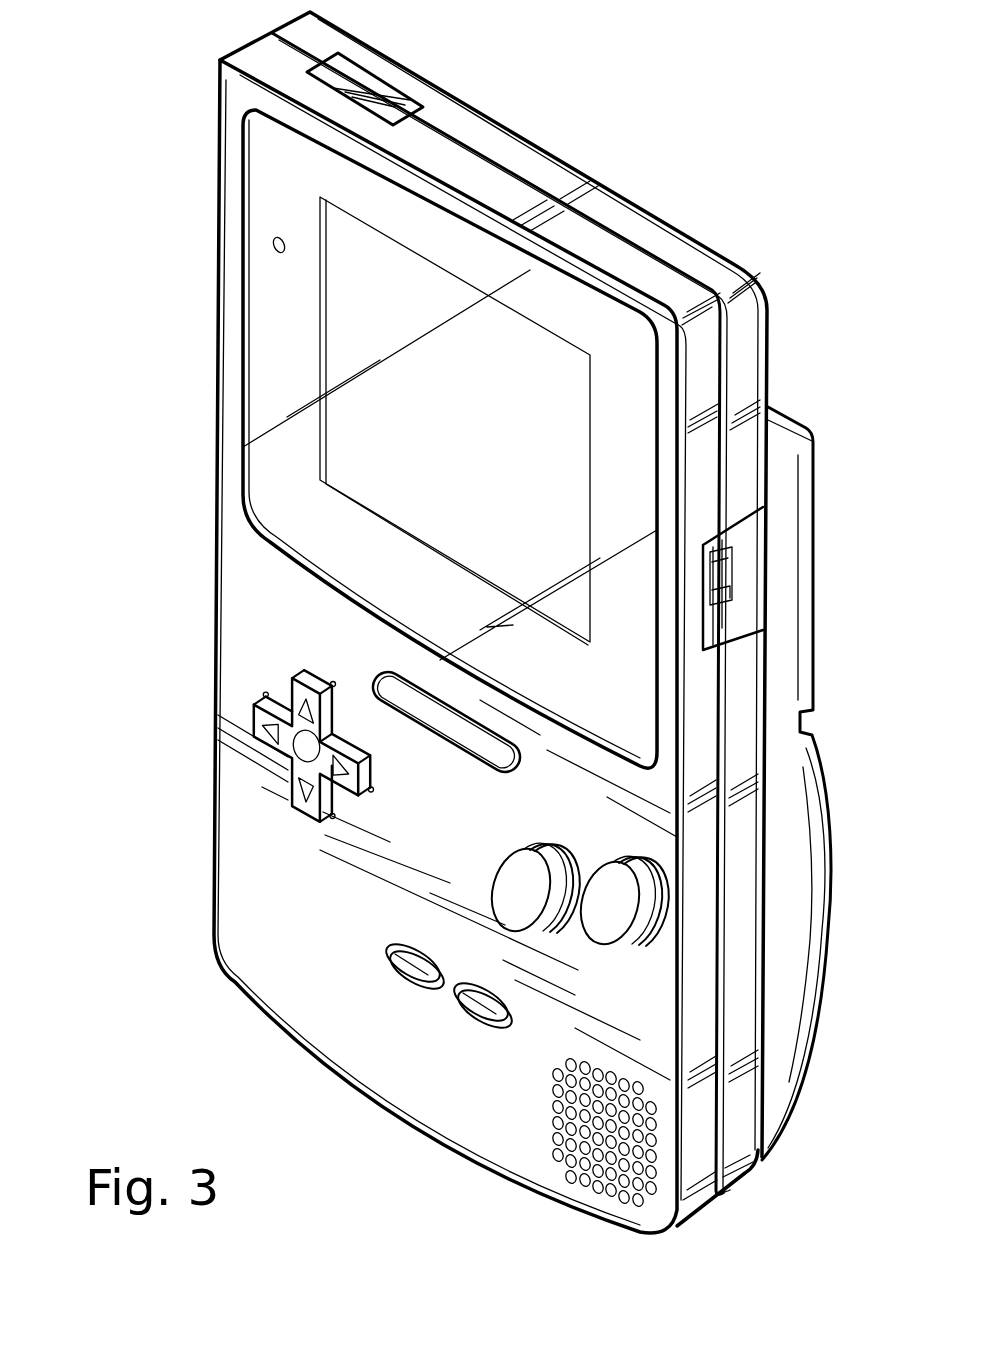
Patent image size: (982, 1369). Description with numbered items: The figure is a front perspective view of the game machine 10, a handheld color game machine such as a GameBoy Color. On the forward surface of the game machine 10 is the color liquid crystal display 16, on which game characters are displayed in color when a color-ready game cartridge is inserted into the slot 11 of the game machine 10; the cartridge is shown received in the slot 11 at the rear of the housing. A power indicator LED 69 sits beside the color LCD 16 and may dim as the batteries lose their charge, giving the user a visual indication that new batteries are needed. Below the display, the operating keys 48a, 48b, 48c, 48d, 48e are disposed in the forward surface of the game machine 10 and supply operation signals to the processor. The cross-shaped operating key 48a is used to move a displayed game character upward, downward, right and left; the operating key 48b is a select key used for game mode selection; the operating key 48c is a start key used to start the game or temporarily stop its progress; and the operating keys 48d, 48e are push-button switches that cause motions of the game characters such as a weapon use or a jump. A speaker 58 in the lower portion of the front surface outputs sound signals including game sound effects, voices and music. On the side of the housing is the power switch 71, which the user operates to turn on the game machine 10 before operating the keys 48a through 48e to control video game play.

The game machine 10 is at (195, 642).
The slot 11 is at (782, 413).
The color liquid crystal display 16 is at (345, 352).
The power indicator LED 69 is at (275, 238).
The power switch 71 is at (745, 593).
The operating key 48a is at (280, 702).
The select key 48b is at (410, 972).
The start key 48c is at (478, 1018).
The push-button switch 48d is at (530, 858).
The push-button switch 48e is at (583, 875).
The speaker 58 is at (623, 1160).